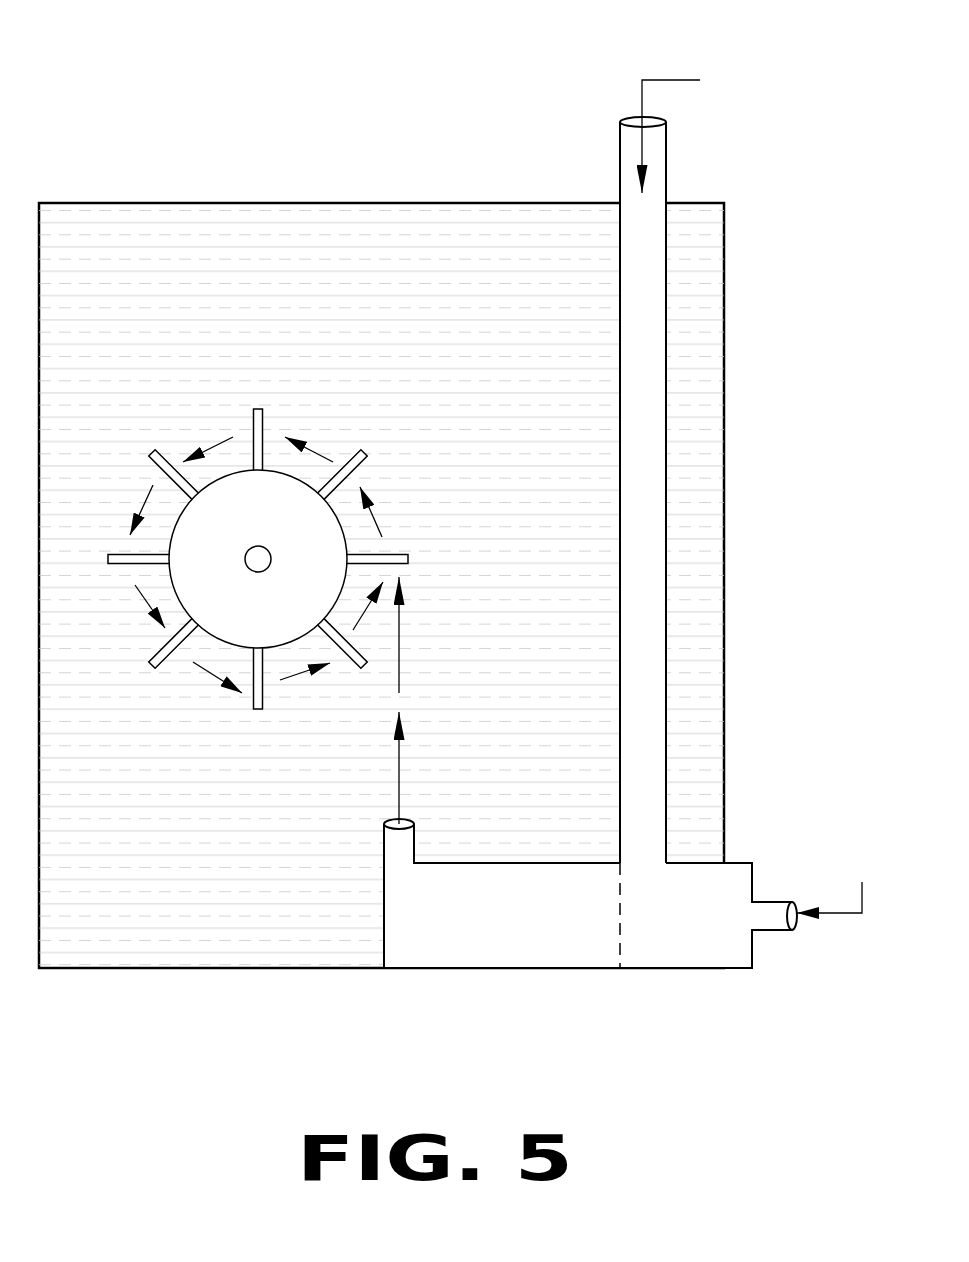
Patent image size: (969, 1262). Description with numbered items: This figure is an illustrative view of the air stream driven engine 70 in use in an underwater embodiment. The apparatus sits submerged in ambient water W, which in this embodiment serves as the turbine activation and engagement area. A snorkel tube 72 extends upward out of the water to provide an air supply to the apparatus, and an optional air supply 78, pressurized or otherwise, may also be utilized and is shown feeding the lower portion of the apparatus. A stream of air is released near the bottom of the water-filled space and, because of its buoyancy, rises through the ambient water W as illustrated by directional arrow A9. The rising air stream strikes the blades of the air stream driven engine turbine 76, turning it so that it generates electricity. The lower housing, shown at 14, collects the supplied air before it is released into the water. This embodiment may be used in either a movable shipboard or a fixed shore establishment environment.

The air stream driven engine 70 is at (381, 489).
The ambient water W is at (298, 253).
The snorkel tube 72 is at (650, 222).
The manifold 14 is at (675, 938).
The optional air supply 78 is at (772, 917).
The directional arrow A9 is at (399, 662).
The air stream driven engine turbine 76 is at (248, 512).